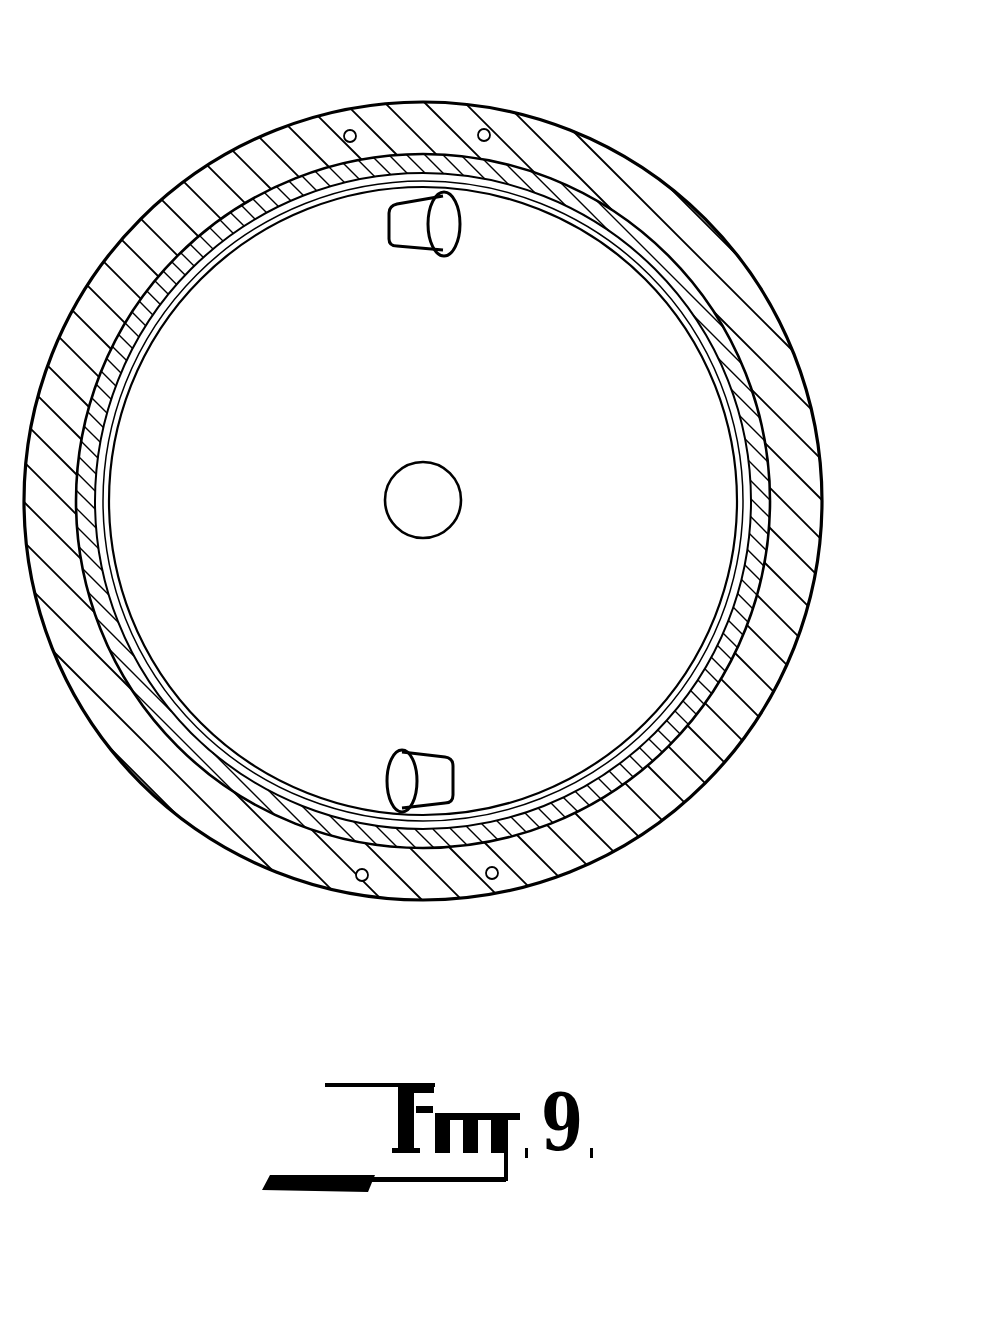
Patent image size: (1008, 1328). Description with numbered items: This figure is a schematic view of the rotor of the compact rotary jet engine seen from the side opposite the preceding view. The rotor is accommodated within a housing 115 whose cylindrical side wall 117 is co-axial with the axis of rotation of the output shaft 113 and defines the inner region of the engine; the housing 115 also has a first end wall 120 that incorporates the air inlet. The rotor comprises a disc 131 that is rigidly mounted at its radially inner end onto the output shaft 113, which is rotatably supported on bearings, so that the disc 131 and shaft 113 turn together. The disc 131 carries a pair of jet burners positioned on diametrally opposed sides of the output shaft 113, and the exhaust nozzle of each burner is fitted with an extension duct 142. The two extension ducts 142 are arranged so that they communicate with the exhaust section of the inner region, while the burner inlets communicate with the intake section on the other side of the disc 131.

The output shaft 113 is at (435, 490).
The housing 115 is at (134, 220).
The cylindrical side wall 117 is at (653, 833).
The first end wall 120 is at (707, 308).
The disc 131 is at (697, 547).
The extension duct 142 is at (417, 224).